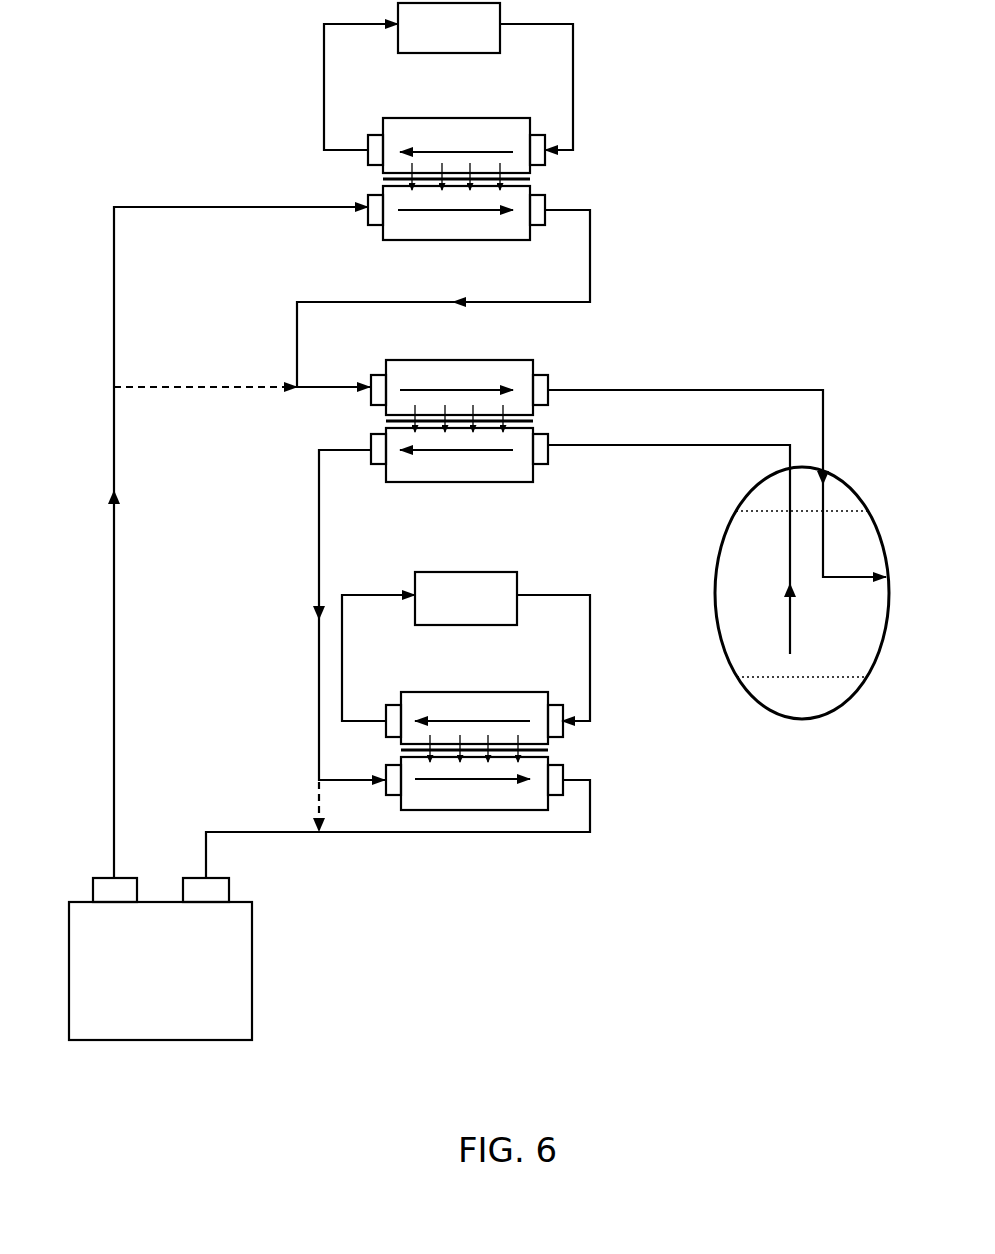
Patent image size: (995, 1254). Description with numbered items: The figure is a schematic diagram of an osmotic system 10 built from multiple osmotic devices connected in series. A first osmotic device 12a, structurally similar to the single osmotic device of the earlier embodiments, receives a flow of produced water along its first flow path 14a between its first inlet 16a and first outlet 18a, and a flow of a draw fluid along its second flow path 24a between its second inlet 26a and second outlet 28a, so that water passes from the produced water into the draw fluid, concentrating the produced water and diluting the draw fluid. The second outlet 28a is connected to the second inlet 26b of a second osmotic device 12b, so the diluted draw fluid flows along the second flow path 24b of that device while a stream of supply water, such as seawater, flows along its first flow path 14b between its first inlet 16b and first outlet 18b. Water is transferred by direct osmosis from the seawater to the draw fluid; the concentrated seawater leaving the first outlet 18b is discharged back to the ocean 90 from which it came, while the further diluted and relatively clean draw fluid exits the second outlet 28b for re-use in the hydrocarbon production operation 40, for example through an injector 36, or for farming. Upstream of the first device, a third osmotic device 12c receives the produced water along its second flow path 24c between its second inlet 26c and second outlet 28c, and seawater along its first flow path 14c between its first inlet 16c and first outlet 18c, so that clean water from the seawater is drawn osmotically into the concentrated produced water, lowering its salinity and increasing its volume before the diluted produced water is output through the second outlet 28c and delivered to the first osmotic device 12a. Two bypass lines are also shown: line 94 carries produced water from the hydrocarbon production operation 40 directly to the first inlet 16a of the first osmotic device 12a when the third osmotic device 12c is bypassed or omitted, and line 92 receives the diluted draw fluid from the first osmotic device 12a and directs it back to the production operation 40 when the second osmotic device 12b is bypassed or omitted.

The osmotic system 10 is at (740, 123).
The first osmotic device 12a is at (510, 435).
The second osmotic device 12b is at (553, 775).
The third osmotic device 12c is at (485, 165).
The first flow path 14a is at (423, 388).
The first flow path 14b is at (448, 718).
The first flow path 14c is at (437, 150).
The first inlet 16a is at (378, 372).
The first chamber inlet 16b is at (557, 703).
The first chamber inlet 16c is at (540, 132).
The first outlet 18a is at (537, 370).
The first outlet 18b is at (392, 705).
The first chamber outlet 18c is at (376, 134).
The second flow path 24a is at (443, 452).
The second flow path 24b is at (443, 782).
The second flow path 24c is at (433, 210).
The second inlet 26a is at (538, 468).
The second inlet 26b is at (392, 795).
The second chamber inlet 26c is at (370, 226).
The second outlet 28a is at (380, 467).
The second outlet 28b is at (563, 763).
The second outlet 28c is at (543, 226).
The injector 36 is at (230, 887).
The hydrocarbon production operation 40 is at (167, 982).
The ocean 90 is at (466, 48).
The line 92 is at (327, 803).
The line 94 is at (138, 387).